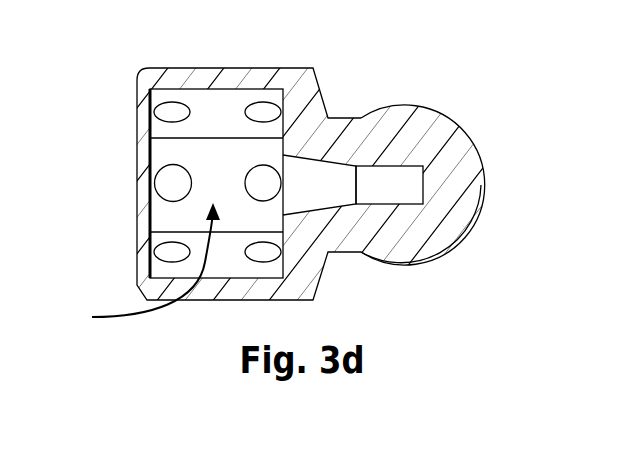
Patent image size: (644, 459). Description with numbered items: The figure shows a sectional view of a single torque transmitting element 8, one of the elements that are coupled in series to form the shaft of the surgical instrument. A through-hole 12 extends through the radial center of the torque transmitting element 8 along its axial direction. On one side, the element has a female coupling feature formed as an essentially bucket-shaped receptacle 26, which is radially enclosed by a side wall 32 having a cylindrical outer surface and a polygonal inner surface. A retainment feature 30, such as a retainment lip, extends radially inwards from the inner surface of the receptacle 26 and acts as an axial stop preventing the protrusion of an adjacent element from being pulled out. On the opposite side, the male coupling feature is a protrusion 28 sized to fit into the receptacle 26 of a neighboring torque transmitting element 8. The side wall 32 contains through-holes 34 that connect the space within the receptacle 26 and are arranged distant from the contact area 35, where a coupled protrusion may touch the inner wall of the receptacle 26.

The torque transmitting element 8 is at (547, 91).
The through-hole 12 is at (452, 190).
The receptacle 26 is at (170, 153).
The protrusion 28 is at (432, 232).
The retainment feature 30 is at (148, 110).
The side wall 32 is at (210, 80).
The through-hole 34 is at (167, 182).
The contact area 35 is at (136, 269).